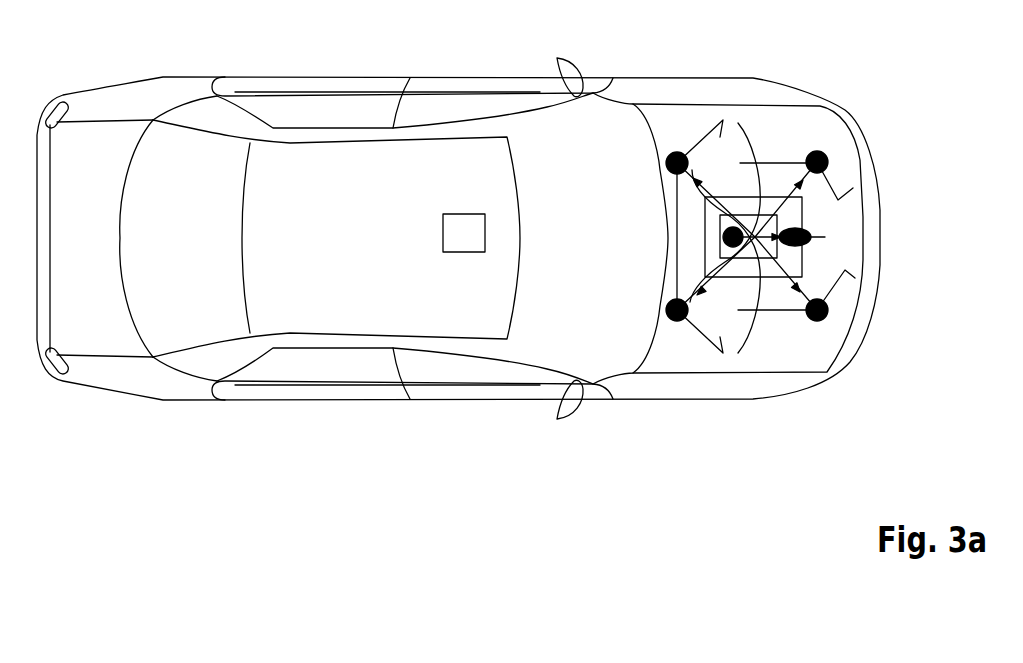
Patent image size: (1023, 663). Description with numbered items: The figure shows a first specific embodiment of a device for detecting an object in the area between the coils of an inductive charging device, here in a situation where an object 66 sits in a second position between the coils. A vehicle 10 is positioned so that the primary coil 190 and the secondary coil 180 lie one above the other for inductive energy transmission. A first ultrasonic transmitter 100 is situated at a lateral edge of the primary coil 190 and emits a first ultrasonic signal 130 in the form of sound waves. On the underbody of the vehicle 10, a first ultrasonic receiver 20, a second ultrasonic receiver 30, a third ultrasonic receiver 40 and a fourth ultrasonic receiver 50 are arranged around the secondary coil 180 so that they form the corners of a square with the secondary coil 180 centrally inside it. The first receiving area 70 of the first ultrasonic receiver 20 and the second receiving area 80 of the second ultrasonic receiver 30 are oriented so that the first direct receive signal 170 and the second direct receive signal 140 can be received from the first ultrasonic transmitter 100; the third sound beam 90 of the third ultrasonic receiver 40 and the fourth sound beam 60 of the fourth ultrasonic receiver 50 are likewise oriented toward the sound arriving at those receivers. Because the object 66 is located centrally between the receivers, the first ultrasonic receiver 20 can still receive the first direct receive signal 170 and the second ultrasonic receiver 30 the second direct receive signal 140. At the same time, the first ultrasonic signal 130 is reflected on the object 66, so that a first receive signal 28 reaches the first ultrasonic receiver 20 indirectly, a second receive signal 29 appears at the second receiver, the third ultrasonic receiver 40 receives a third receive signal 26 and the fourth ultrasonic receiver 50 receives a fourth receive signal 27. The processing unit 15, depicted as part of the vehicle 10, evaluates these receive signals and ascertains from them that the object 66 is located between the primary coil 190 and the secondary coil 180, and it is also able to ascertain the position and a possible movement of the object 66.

The vehicle 10 is at (343, 160).
The processing unit 15 is at (443, 230).
The first ultrasonic receiver 20 is at (830, 300).
The third receive signal 26 is at (767, 280).
The fourth receive signal 27 is at (702, 187).
The first receive signal 28 is at (833, 203).
The second receive signal 29 is at (830, 272).
The second ultrasonic receiver 30 is at (845, 312).
The third ultrasonic receiver 40 is at (677, 321).
The fourth ultrasonic receiver 50 is at (677, 152).
The fourth sound beam 60 is at (738, 123).
The object 66 is at (815, 225).
The first receiving area 70 is at (838, 200).
The second receiving area 80 is at (838, 290).
The third sound beam 90 is at (738, 353).
The first ultrasonic transmitter 100 is at (705, 237).
The first ultrasonic signal 130 is at (778, 213).
The second direct receive signal 140 is at (787, 313).
The first direct receive signal 170 is at (805, 153).
The secondary coil 180 is at (707, 200).
The primary coil 190 is at (705, 270).